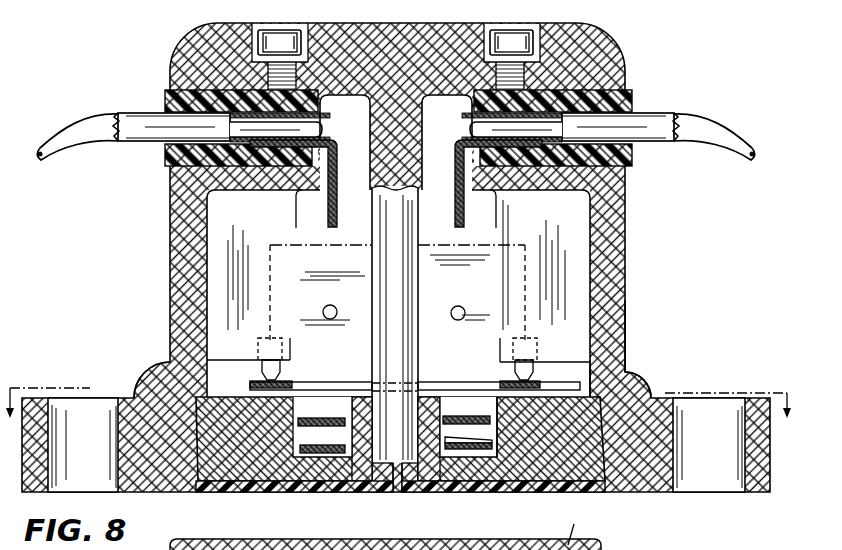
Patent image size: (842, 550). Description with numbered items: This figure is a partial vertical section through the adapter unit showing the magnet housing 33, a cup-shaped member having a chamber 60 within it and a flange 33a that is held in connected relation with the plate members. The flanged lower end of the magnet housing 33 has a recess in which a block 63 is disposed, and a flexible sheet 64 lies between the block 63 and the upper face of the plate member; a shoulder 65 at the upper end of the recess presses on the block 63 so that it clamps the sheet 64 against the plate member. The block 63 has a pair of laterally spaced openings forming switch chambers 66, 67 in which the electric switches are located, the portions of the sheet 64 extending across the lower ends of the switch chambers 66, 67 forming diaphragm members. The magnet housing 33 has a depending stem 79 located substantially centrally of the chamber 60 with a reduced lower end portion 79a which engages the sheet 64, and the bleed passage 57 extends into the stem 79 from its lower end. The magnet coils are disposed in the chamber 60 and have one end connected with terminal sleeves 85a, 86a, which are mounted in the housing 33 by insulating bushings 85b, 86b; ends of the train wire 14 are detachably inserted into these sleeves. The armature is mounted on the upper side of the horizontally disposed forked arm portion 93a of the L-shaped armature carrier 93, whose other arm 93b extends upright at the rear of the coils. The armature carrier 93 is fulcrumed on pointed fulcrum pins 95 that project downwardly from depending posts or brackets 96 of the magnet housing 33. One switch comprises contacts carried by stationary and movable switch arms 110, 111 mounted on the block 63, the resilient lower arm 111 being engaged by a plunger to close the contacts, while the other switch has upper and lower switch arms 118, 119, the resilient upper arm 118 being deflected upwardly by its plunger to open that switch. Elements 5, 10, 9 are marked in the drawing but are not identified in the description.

The train wire 14 is at (70, 122).
The insulating bushing 86b is at (203, 92).
The insulating bushing 85b is at (629, 96).
The terminal sleeve 86a is at (318, 108).
The depending stem 79 is at (415, 137).
The reduced lower end portion 79a is at (368, 447).
The upright arm of armature carrier 93b is at (310, 243).
The terminal sleeve 85a is at (507, 236).
The magnet housing 33 is at (622, 237).
The depending posts or brackets 96 is at (513, 297).
The block 63 is at (205, 412).
The switch chamber 67 is at (326, 408).
The switch chamber 66 is at (450, 410).
The fulcrum pin 95 is at (537, 374).
The chamber 60 is at (577, 375).
The shoulder 65 is at (606, 393).
The upper switch arm 118 is at (318, 424).
The lower switch arm 119 is at (320, 451).
The armature carrier 93 is at (488, 419).
The forked arm portion 93a is at (538, 406).
The stationary switch arm 110 is at (493, 441).
The movable switch arm 111 is at (490, 450).
The flexible sheet 64 is at (537, 480).
The bleed passage 57 is at (425, 478).
The flange 33a is at (748, 494).
The section line 5 is at (396, 416).
The base plate 10 is at (238, 545).
The plate 9 is at (574, 524).